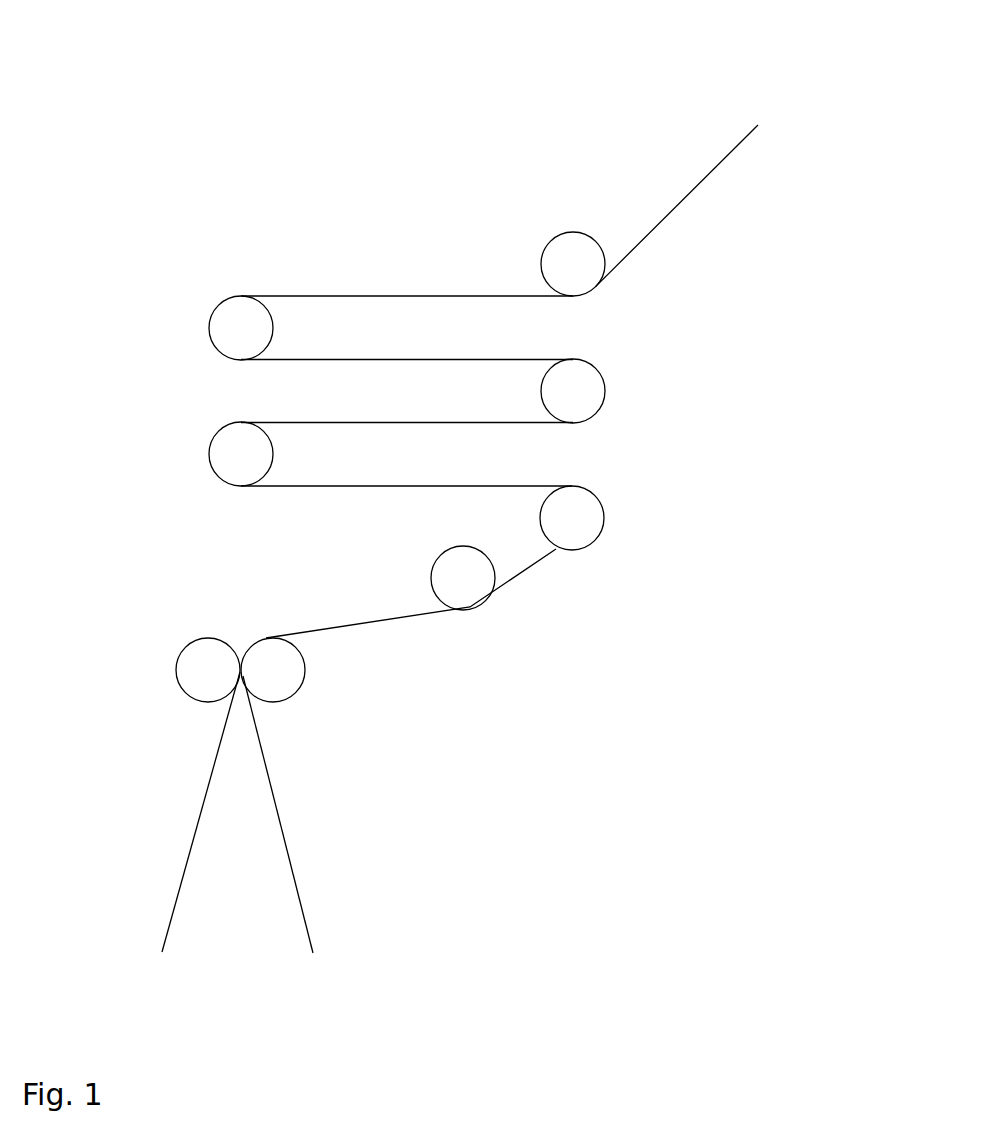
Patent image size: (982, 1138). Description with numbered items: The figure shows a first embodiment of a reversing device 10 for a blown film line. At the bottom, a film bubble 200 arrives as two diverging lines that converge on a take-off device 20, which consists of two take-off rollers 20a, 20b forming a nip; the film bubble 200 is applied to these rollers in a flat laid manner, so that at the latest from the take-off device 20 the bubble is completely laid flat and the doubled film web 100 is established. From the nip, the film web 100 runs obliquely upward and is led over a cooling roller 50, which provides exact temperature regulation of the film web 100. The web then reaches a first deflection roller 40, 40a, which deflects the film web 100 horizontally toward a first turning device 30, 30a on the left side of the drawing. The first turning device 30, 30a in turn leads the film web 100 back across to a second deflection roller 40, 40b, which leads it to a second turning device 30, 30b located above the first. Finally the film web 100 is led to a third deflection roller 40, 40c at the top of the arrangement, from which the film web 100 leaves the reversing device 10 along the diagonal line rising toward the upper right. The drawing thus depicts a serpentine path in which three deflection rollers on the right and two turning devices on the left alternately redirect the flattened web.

The reversing device 10 is at (166, 90).
The take-off device 20 is at (148, 665).
The take-off roller 20a is at (200, 640).
The take-off roller 20b is at (283, 703).
The turning device 30 is at (150, 322).
The first turning device 30a is at (215, 433).
The second turning device 30b is at (212, 303).
The deflection roller 40 is at (630, 278).
The first deflection roller 40a is at (603, 500).
The second deflection roller 40b is at (606, 378).
The third deflection roller 40c is at (565, 231).
The cooling roller 50 is at (497, 588).
The film web 100 is at (401, 623).
The film bubble 200 is at (305, 917).